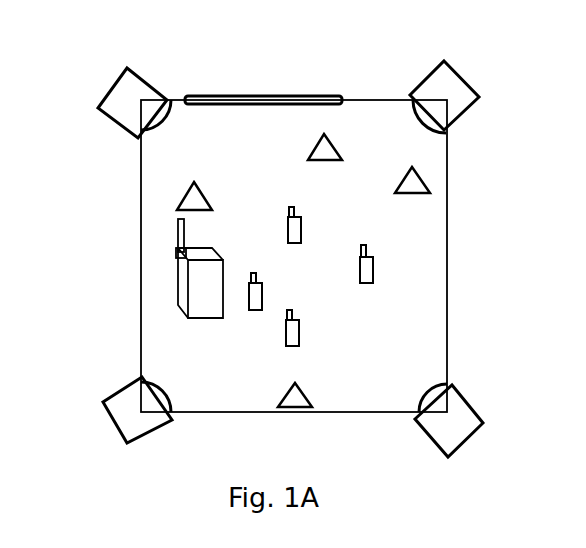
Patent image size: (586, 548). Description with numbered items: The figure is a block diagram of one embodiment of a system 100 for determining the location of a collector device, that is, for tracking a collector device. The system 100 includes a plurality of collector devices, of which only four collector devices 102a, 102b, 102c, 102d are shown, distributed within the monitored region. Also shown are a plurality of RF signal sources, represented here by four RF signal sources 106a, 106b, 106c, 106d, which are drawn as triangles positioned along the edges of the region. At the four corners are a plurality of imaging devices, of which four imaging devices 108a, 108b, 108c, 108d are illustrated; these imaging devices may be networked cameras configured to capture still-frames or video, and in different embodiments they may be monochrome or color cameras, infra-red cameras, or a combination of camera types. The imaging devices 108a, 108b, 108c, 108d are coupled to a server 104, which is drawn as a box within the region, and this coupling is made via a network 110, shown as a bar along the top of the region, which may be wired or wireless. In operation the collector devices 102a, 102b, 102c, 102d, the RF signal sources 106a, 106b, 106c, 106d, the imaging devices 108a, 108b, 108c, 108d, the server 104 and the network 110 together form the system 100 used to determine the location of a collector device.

The system 100 is at (141, 250).
The collector device 102a is at (288, 217).
The collector device 102b is at (254, 283).
The collector device 102c is at (375, 277).
The collector device 102d is at (273, 335).
The server 104 is at (141, 276).
The RF signal source 106a is at (141, 197).
The RF signal source 106b is at (267, 100).
The RF signal source 106c is at (447, 178).
The RF signal source 106d is at (241, 412).
The imaging device 108a is at (447, 454).
The imaging device 108b is at (118, 434).
The imaging device 108c is at (103, 94).
The imaging device 108d is at (455, 72).
The network 110 is at (250, 95).